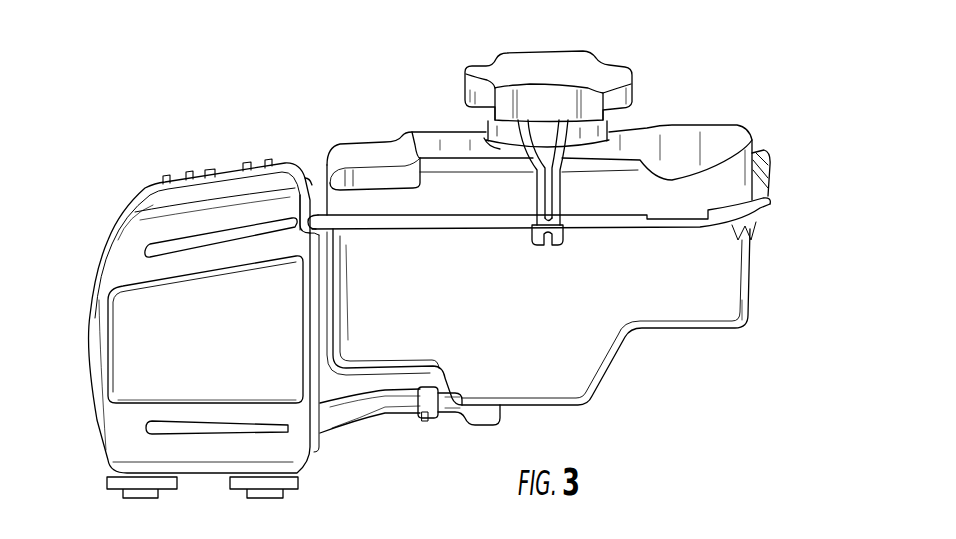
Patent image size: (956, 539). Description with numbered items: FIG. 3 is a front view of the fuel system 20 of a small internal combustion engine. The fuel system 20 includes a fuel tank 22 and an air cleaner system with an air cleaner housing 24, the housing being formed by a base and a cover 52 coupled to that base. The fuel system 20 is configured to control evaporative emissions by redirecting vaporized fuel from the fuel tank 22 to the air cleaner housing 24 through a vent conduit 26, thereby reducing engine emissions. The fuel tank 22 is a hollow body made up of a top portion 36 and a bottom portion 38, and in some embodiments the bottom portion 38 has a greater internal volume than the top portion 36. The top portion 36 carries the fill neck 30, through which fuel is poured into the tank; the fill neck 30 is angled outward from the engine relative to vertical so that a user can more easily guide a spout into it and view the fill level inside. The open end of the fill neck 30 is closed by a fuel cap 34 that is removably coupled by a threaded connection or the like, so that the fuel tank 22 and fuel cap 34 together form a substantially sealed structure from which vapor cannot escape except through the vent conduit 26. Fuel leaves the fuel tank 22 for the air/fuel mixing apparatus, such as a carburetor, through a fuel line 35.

The fuel system 20 is at (761, 62).
The fuel tank 22 is at (764, 127).
The air cleaner housing 24 is at (134, 183).
The vent conduit 26 is at (311, 197).
The fill neck 30 is at (516, 140).
The fuel cap 34 is at (614, 69).
The fuel line 35 is at (358, 420).
The top portion 36 is at (697, 138).
The bottom portion 38 is at (752, 268).
The cover 52 is at (112, 360).